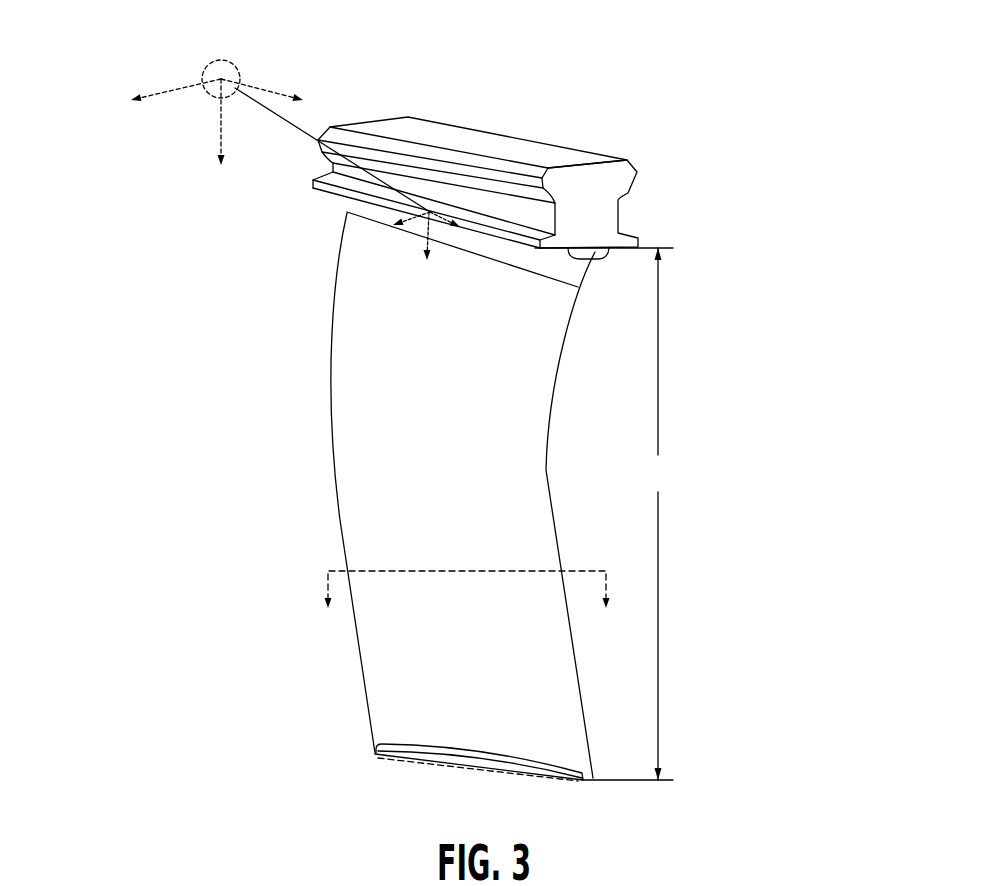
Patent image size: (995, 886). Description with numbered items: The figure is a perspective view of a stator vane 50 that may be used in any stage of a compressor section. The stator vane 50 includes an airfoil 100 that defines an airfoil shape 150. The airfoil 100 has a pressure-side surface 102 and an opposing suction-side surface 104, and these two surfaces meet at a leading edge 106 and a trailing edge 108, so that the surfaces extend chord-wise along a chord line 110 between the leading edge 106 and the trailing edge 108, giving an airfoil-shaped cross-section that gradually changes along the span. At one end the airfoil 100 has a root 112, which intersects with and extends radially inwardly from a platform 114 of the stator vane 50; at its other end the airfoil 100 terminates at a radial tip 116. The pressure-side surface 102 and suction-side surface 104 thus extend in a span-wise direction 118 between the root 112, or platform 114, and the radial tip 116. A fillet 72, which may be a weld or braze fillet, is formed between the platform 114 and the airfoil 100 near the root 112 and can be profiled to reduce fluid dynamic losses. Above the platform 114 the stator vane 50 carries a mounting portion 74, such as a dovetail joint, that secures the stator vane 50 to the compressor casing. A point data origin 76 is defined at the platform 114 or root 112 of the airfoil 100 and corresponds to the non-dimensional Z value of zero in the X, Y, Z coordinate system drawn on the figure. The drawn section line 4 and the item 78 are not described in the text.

The stator vane 50 is at (77, 62).
The fillet 72 is at (475, 214).
The mounting portion 74 is at (604, 219).
The point data origin 76 is at (220, 62).
The rail base 78 is at (371, 222).
The airfoil 100 is at (441, 495).
The pressure-side surface 102 is at (352, 501).
The suction-side surface 104 is at (347, 312).
The leading edge 106 is at (333, 440).
The trailing edge 108 is at (547, 444).
The chord line 110 is at (437, 762).
The root 112 is at (576, 288).
The platform 114 is at (604, 259).
The radial tip 116 is at (485, 758).
The span-wise direction 118 is at (661, 514).
The airfoil shape 150 is at (463, 473).
The section line 4- 4 is at (465, 609).